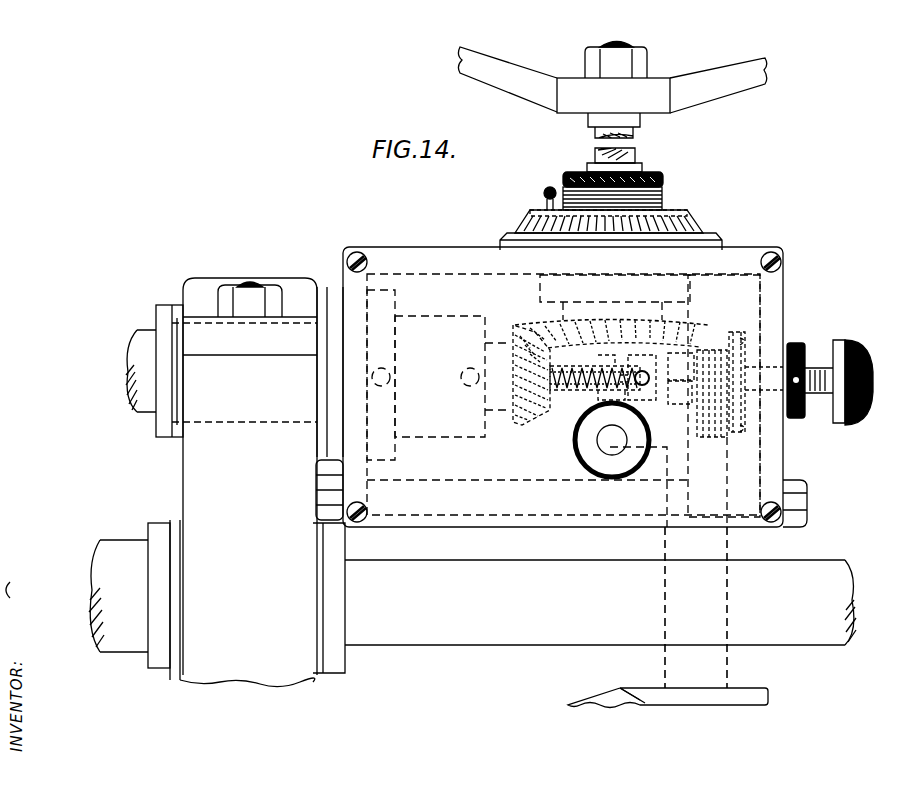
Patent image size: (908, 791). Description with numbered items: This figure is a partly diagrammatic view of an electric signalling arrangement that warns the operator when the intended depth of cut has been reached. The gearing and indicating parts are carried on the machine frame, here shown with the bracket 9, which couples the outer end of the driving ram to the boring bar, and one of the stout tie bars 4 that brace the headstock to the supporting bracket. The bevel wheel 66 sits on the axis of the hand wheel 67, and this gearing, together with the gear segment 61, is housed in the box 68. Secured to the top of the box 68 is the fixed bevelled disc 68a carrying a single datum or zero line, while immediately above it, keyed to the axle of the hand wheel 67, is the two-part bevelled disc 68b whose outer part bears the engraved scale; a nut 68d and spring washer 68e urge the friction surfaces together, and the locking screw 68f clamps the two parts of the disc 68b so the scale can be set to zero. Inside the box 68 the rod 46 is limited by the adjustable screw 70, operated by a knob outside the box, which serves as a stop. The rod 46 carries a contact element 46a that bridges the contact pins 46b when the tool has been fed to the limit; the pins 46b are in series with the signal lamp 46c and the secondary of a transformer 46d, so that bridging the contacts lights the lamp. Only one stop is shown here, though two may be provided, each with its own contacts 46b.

The tie bars 4 is at (600, 602).
The bracket 9 is at (217, 482).
The bar 46 is at (577, 392).
The contact element 46a is at (643, 394).
The contact pins 46b is at (683, 397).
The signal lamp 46c is at (607, 444).
The transformer 46d is at (622, 688).
The segment gear 61 is at (530, 350).
The bevel wheel 66 is at (676, 340).
The hand wheel 67 is at (684, 95).
The box 68 is at (462, 249).
The bevelled disc 68a is at (706, 242).
The two-part bevelled disc 68b is at (532, 228).
The nut 68d is at (664, 180).
The spring washer 68e is at (663, 199).
The locking screw 68f is at (546, 191).
The adjustable screw 70 is at (860, 347).